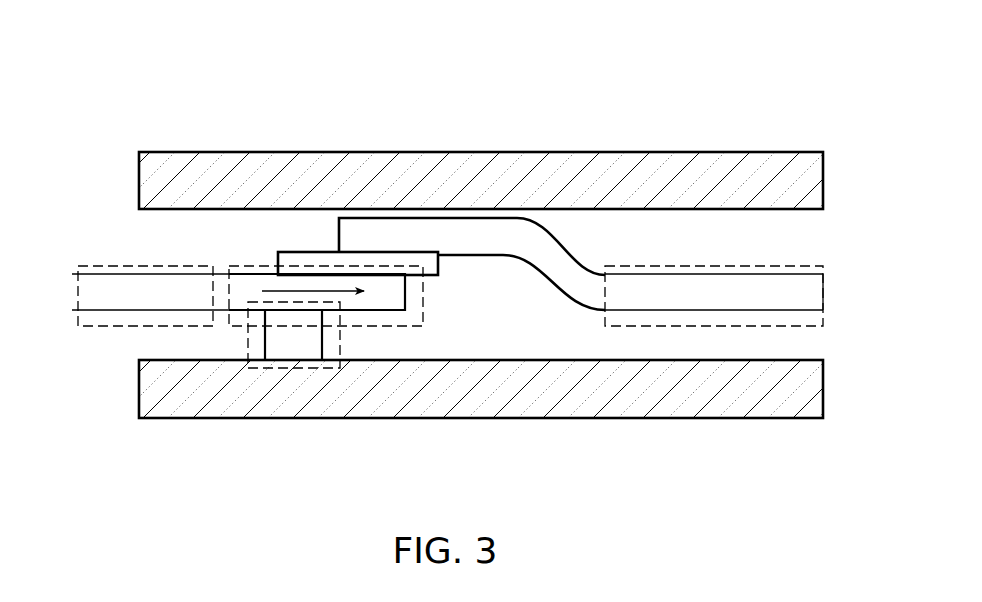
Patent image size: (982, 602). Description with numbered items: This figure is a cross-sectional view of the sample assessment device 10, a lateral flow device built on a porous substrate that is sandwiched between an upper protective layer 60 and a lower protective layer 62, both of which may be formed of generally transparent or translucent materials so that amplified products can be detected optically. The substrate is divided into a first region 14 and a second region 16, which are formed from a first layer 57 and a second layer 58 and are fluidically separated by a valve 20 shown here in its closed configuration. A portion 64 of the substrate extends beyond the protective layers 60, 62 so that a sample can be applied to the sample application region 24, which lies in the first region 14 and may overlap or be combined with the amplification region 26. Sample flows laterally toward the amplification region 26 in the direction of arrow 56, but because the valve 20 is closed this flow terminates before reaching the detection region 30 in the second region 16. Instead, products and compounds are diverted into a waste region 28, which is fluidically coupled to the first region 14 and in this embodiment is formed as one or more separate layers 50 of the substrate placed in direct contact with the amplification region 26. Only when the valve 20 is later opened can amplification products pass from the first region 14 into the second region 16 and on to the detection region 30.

The sample assessment device 10 is at (652, 84).
The first region 14 is at (262, 459).
The second region 16 is at (654, 442).
The valve 20 is at (437, 258).
The sample application region 24 is at (100, 328).
The amplification region 26 is at (385, 327).
The waste region 28 is at (340, 335).
The detection region 30 is at (783, 265).
The separate layers 50 is at (290, 345).
The arrow 56 is at (317, 290).
The first layer 57 is at (113, 273).
The second layer 58 is at (787, 310).
The protective layer 60 is at (223, 162).
The protective layer 62 is at (212, 410).
The portion 64 is at (86, 246).